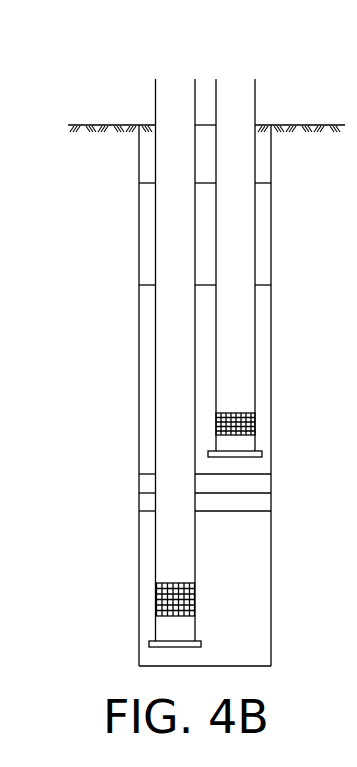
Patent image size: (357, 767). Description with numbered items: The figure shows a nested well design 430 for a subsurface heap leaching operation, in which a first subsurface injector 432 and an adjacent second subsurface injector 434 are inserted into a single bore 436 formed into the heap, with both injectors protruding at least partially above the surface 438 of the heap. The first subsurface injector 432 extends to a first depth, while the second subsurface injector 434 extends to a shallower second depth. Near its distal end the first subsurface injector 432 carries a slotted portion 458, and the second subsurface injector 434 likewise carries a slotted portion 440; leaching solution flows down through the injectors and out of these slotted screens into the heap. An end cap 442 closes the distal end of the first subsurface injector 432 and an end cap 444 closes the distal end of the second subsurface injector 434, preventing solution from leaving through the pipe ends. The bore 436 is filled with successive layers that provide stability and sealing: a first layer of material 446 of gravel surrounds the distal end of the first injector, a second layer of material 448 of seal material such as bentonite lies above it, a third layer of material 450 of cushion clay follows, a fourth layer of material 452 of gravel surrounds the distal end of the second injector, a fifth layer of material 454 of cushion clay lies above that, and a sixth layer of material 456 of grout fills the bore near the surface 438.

The nested well design 430 is at (126, 33).
The first subsurface injector 432 is at (155, 92).
The second subsurface injector 434 is at (256, 96).
The bore 436 is at (272, 212).
The surface 438 is at (73, 125).
The slotted portion 440 is at (256, 421).
The end cap 442 is at (149, 645).
The end cap 444 is at (262, 454).
The first layer of material 446 is at (139, 561).
The second layer of material 448 is at (139, 504).
The third layer of material 450 is at (139, 482).
The fourth layer of material 452 is at (139, 354).
The fifth layer of material 454 is at (139, 227).
The sixth layer of material 456 is at (139, 157).
The slotted portion 458 is at (156, 602).